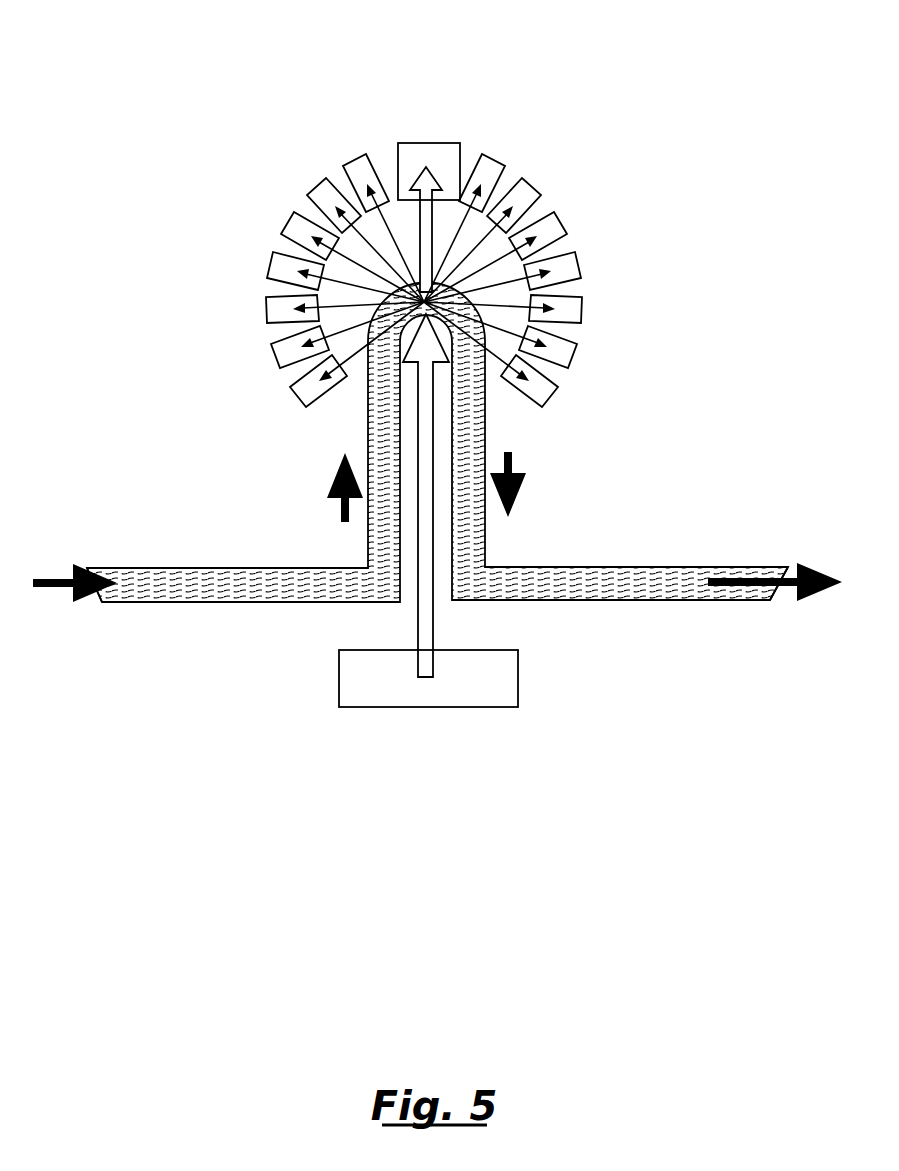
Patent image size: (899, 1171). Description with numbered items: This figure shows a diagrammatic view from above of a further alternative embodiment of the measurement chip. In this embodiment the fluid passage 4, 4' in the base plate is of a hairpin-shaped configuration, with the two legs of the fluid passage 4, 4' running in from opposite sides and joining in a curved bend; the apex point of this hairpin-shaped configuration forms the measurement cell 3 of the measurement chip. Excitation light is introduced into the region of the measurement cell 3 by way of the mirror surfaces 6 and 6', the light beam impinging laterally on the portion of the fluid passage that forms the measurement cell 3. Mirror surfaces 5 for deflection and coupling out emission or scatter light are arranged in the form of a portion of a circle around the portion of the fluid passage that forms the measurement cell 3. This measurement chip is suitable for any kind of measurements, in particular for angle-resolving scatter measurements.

The measurement cell 3 is at (428, 300).
The fluid passage 4 is at (243, 659).
The fluid passage 4' is at (620, 662).
The mirror surfaces 5 is at (300, 223).
The mirror surface 6 is at (377, 749).
The mirror surface 6' is at (434, 103).